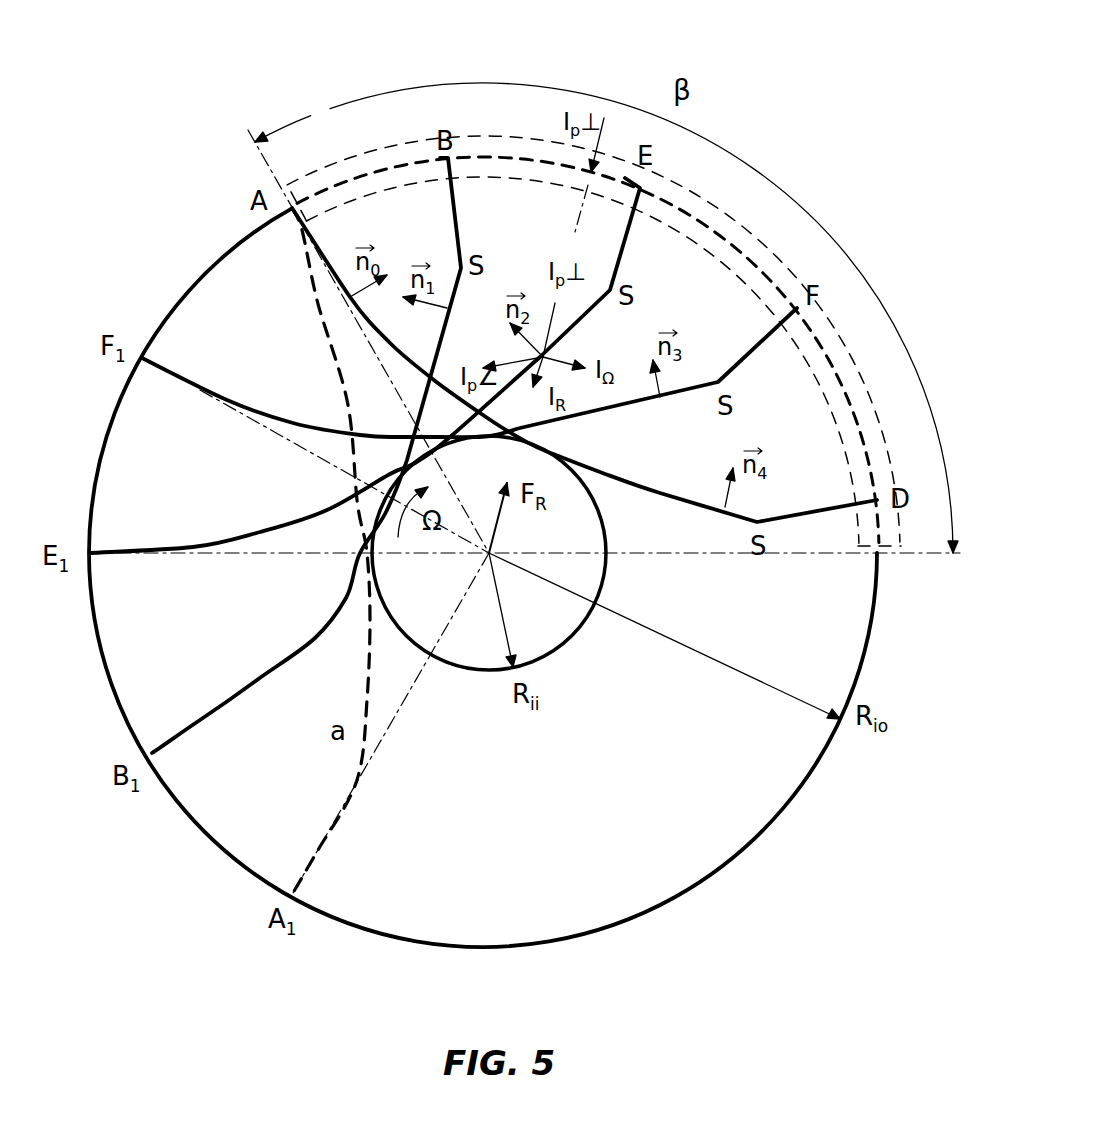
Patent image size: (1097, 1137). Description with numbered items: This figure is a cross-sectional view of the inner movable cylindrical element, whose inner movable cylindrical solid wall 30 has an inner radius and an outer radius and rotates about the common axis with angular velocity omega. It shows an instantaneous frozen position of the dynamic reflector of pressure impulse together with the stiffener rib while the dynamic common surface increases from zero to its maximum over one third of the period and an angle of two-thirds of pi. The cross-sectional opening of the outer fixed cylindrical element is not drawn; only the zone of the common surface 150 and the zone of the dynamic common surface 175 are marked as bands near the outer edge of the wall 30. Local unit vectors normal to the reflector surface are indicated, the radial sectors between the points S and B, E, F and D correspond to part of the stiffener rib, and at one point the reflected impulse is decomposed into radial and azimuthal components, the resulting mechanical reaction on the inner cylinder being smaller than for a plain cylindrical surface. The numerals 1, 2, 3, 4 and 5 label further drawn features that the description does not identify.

The first rotor blade (with displaced position a) 1 is at (343, 778).
The second rotor blade 2 is at (255, 677).
The third rotor blade 3 is at (207, 545).
The fourth rotor blade 4 is at (245, 405).
The blade suction side region 5 is at (637, 484).
The inner movable cylindrical solid wall 30 is at (743, 793).
The common surface 150 is at (750, 235).
The dynamic common surface 175 is at (350, 157).